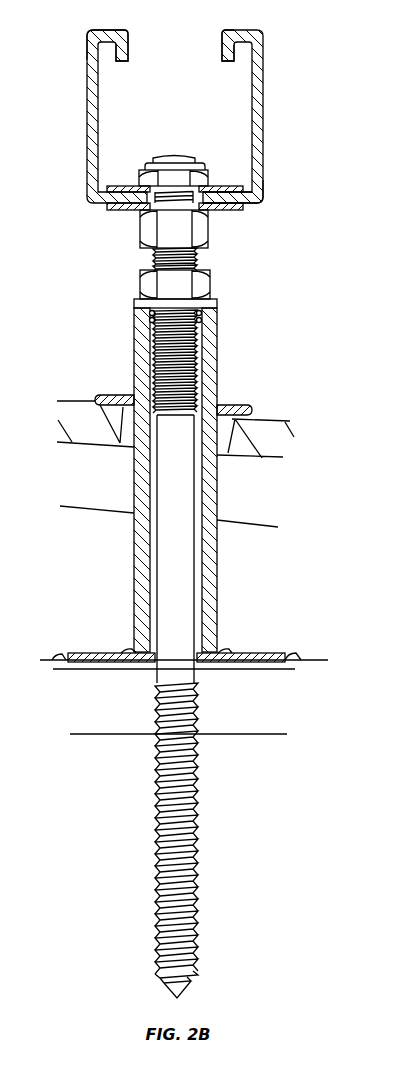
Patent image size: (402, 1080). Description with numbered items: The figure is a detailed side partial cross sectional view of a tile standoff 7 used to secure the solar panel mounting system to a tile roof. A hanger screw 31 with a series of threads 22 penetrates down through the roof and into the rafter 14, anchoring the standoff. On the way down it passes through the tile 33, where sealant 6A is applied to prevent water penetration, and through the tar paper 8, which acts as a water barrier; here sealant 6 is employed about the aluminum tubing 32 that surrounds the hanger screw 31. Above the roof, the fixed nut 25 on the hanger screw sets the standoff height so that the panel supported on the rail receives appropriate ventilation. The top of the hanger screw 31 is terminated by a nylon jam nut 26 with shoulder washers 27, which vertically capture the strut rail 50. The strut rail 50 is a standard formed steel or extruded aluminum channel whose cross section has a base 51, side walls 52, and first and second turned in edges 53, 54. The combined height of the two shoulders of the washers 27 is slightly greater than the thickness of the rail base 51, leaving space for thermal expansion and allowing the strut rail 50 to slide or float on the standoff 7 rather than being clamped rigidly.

The strut rail 50 is at (90, 117).
The side walls 52 is at (90, 52).
The first turned in edge 53 is at (126, 50).
The second turned in edge 54 is at (223, 52).
The rail base 51 is at (241, 200).
The nylon jam nut 26 is at (197, 165).
The shoulder washers 27 is at (130, 188).
The fixed nut 25 is at (146, 230).
The tile standoff 7 is at (165, 623).
The aluminum tubing 32 is at (212, 577).
The hanger screw 31 is at (199, 709).
The series of threads 22 is at (200, 864).
The tile 33 is at (84, 410).
The sealant 6A is at (252, 410).
The tar paper 8 is at (92, 659).
The sealant 6 is at (228, 653).
The rafter 14 is at (178, 790).